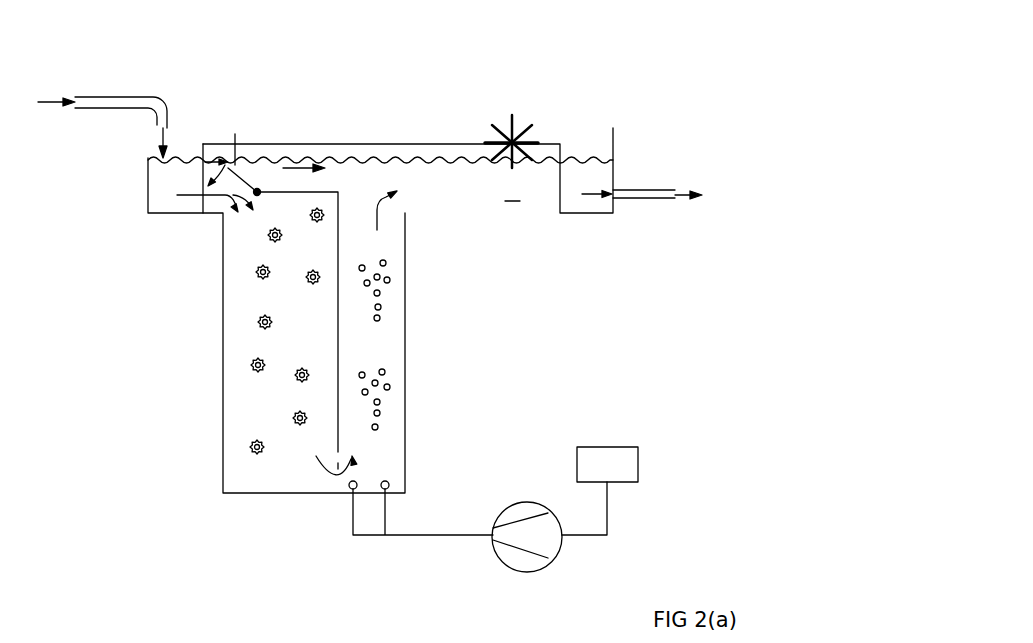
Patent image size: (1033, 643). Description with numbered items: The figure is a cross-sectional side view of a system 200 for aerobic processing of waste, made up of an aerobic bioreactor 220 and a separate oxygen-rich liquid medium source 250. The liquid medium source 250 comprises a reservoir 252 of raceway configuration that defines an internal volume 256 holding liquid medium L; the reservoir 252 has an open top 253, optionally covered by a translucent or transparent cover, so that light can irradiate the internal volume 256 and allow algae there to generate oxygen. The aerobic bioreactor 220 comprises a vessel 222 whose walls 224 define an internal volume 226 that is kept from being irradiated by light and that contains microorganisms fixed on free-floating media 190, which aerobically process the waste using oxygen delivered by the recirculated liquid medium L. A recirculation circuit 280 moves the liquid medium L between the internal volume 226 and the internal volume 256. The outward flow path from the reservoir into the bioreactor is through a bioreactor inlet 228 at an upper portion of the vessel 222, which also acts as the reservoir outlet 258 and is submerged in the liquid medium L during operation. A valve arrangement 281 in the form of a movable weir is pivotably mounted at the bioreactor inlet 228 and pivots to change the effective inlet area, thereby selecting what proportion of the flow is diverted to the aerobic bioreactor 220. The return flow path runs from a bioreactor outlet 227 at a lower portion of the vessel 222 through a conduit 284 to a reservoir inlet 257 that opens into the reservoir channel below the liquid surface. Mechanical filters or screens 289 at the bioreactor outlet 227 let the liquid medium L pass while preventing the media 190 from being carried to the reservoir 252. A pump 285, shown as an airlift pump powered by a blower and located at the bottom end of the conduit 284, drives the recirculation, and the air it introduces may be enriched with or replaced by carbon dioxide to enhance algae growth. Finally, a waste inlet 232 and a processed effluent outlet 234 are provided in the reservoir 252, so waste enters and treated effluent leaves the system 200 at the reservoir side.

The system 200 is at (573, 97).
The aerobic bioreactor 220 is at (212, 293).
The vessel 222 is at (223, 367).
The walls 224 is at (223, 462).
The internal volume 226 is at (323, 346).
The bioreactor outlet 227 is at (336, 490).
The bioreactor inlet 228 is at (220, 210).
The waste inlet 232 is at (155, 113).
The processed effluent outlet 234 is at (673, 200).
The oxygen-rich liquid medium source 250 is at (525, 224).
The reservoir 252 is at (613, 130).
The open top 253 is at (430, 143).
The internal volume 256 is at (477, 201).
The reservoir inlet 257 is at (362, 182).
The reservoir outlet 258 is at (209, 237).
The recirculation circuit 280 is at (333, 136).
The valve arrangement 281 is at (257, 189).
The conduit 284 is at (392, 347).
The pump 285 is at (543, 563).
The mechanical filters or screens 289 is at (322, 482).
The media 190 is at (254, 368).